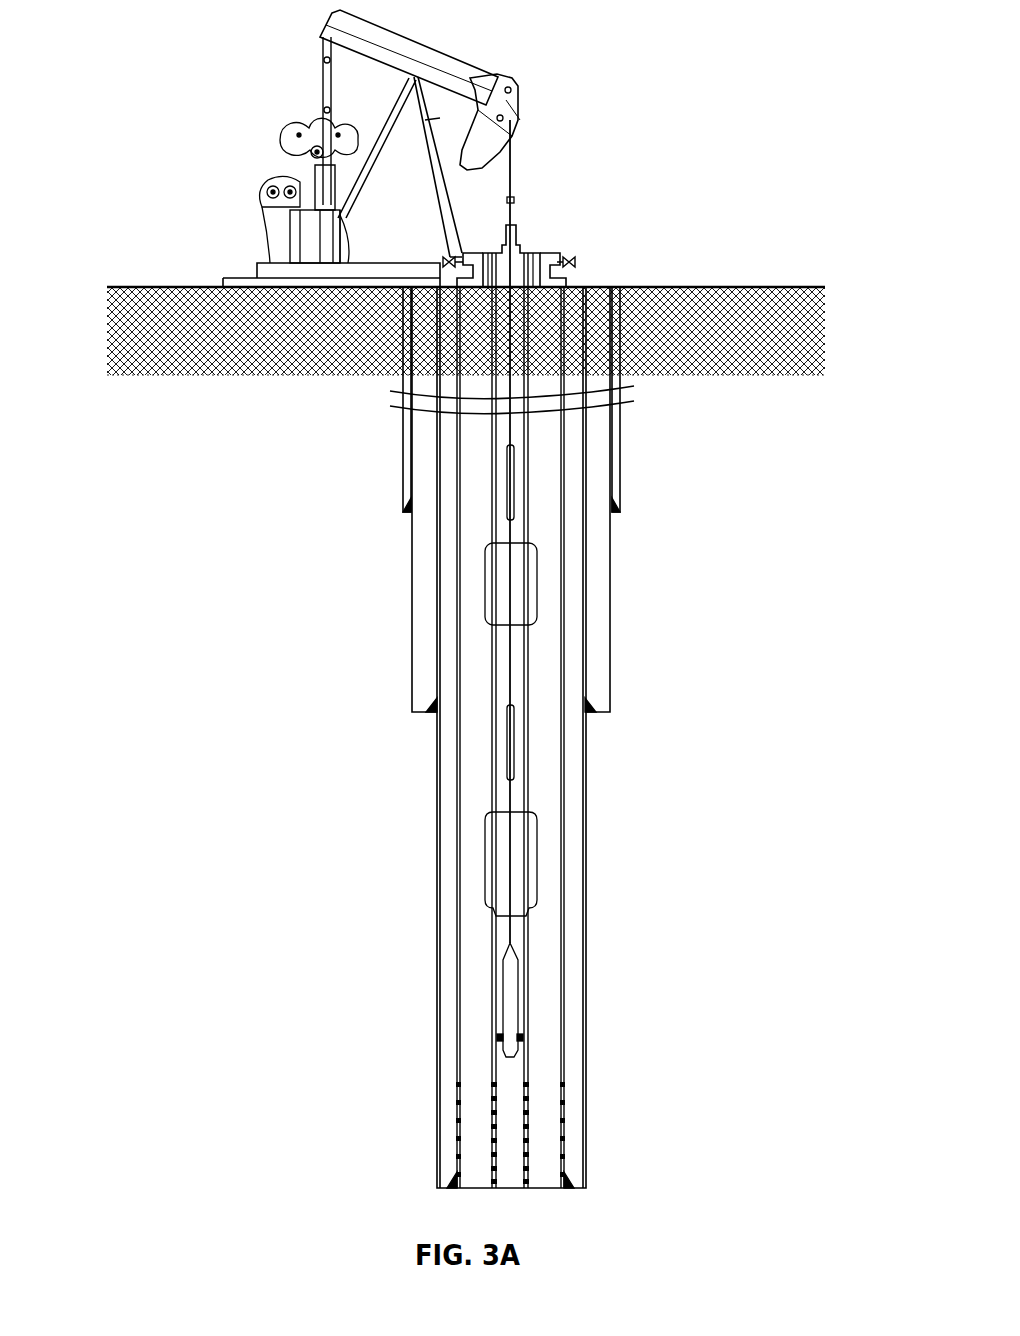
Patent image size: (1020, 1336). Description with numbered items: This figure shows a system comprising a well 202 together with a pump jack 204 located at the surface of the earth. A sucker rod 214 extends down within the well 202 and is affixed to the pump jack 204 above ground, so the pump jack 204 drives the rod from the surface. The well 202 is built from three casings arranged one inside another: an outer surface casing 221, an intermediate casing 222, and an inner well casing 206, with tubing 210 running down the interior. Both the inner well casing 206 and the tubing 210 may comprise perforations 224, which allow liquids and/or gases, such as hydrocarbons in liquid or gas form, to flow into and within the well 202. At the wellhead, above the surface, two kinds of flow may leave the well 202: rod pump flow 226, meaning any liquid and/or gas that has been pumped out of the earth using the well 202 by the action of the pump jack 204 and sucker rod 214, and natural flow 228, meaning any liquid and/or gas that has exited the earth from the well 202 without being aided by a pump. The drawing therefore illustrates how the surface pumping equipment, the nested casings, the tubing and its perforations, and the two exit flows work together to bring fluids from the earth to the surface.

The well 202 is at (665, 575).
The pump jack 204 is at (293, 45).
The inner well casing 206 is at (435, 536).
The tubing 210 is at (497, 718).
The sucker rod 214 is at (493, 420).
The surface casing 221 is at (400, 460).
The intermediate casing 222 is at (420, 598).
The perforations 224 is at (450, 1155).
The rod pump flow 226 is at (520, 247).
The natural flow 228 is at (562, 255).